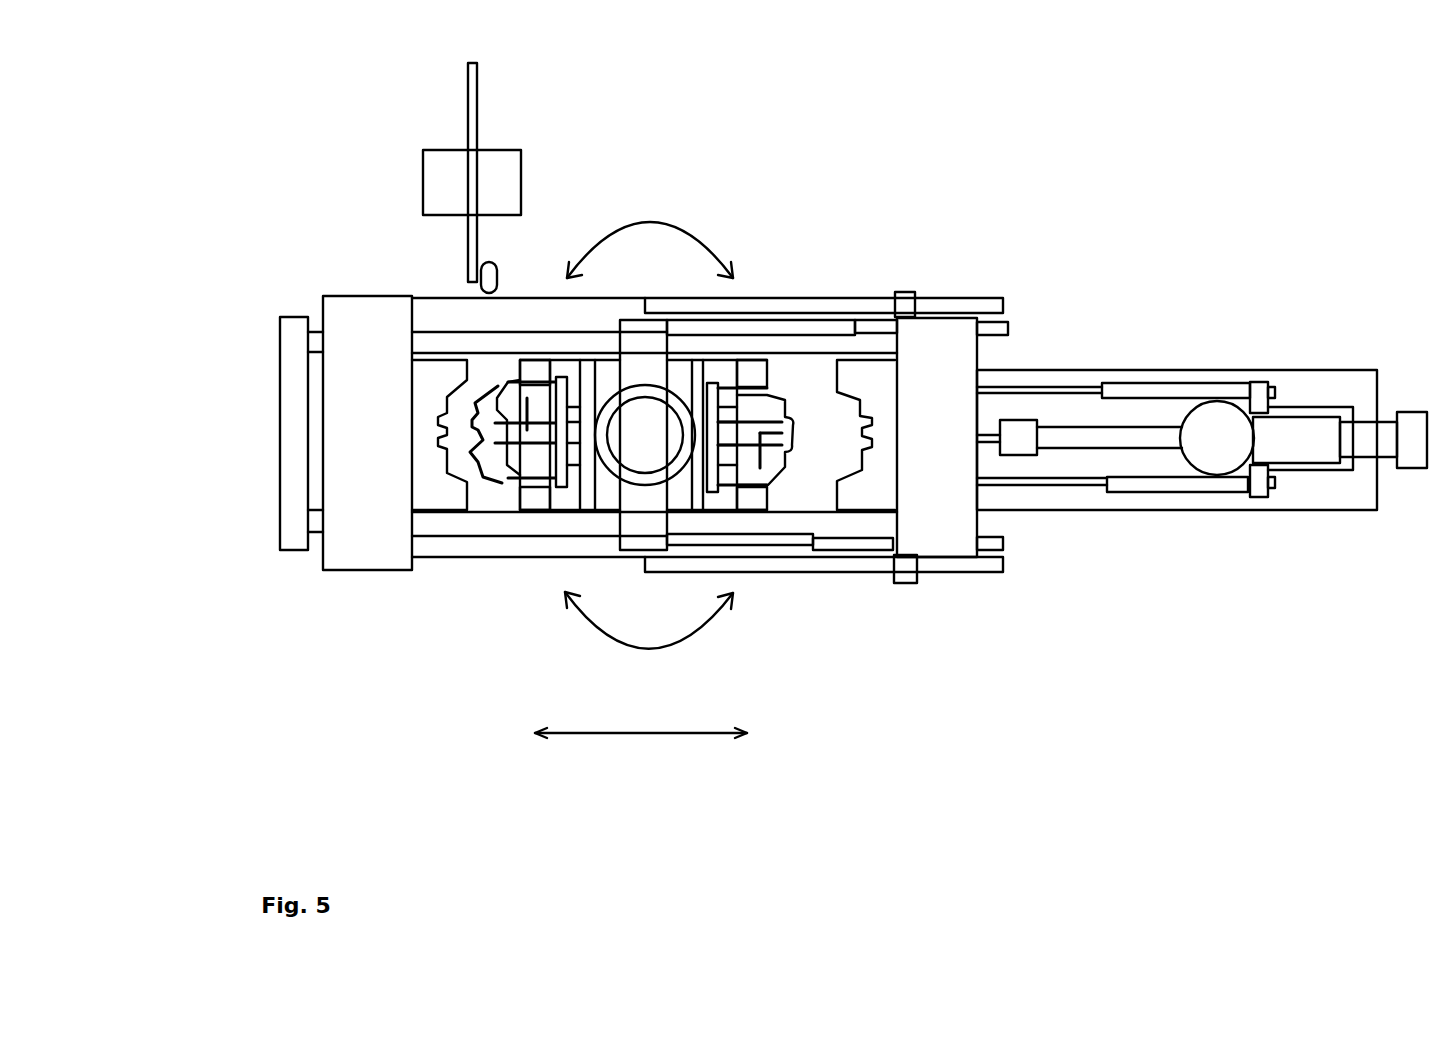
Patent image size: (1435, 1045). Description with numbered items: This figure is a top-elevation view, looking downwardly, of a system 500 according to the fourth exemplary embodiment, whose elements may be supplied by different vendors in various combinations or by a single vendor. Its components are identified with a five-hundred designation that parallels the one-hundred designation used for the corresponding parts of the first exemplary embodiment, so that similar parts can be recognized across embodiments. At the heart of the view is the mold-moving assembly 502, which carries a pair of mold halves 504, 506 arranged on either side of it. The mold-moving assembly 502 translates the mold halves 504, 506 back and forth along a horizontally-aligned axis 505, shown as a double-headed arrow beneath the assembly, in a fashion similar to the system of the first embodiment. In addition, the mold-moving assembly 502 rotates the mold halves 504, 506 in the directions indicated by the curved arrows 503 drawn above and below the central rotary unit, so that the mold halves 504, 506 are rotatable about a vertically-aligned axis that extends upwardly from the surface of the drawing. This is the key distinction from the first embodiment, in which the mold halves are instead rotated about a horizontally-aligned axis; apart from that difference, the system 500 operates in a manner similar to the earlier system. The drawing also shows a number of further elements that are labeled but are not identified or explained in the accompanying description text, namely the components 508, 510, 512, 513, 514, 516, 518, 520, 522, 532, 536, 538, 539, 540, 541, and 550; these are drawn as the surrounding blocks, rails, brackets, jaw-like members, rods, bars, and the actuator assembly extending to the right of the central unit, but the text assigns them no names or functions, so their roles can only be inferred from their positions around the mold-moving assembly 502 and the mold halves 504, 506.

The system 500 is at (1125, 215).
The mold-moving assembly 502 is at (650, 428).
The curved arrows 503 is at (650, 222).
The mold half 504 is at (533, 497).
The horizontally-aligned axis 505 is at (633, 733).
The mold half 506 is at (755, 498).
The left holder assembly 508 is at (502, 580).
The right holder assembly 510 is at (777, 585).
The left die jaw 512 is at (433, 386).
The bracket 513 is at (872, 327).
The rod 514 is at (493, 278).
The right die jaw 516 is at (875, 378).
The cam follower 518 is at (790, 453).
The actuator box 520 is at (500, 167).
The drive cylinder assembly 522 is at (1305, 497).
The end block 532 is at (957, 527).
The upper guide rail 536 is at (447, 340).
The lower guide rail 538 is at (430, 522).
The end plate 539 is at (293, 365).
The head block 540 is at (353, 458).
The slide bar 541 is at (820, 305).
The gripper finger 550 is at (490, 483).